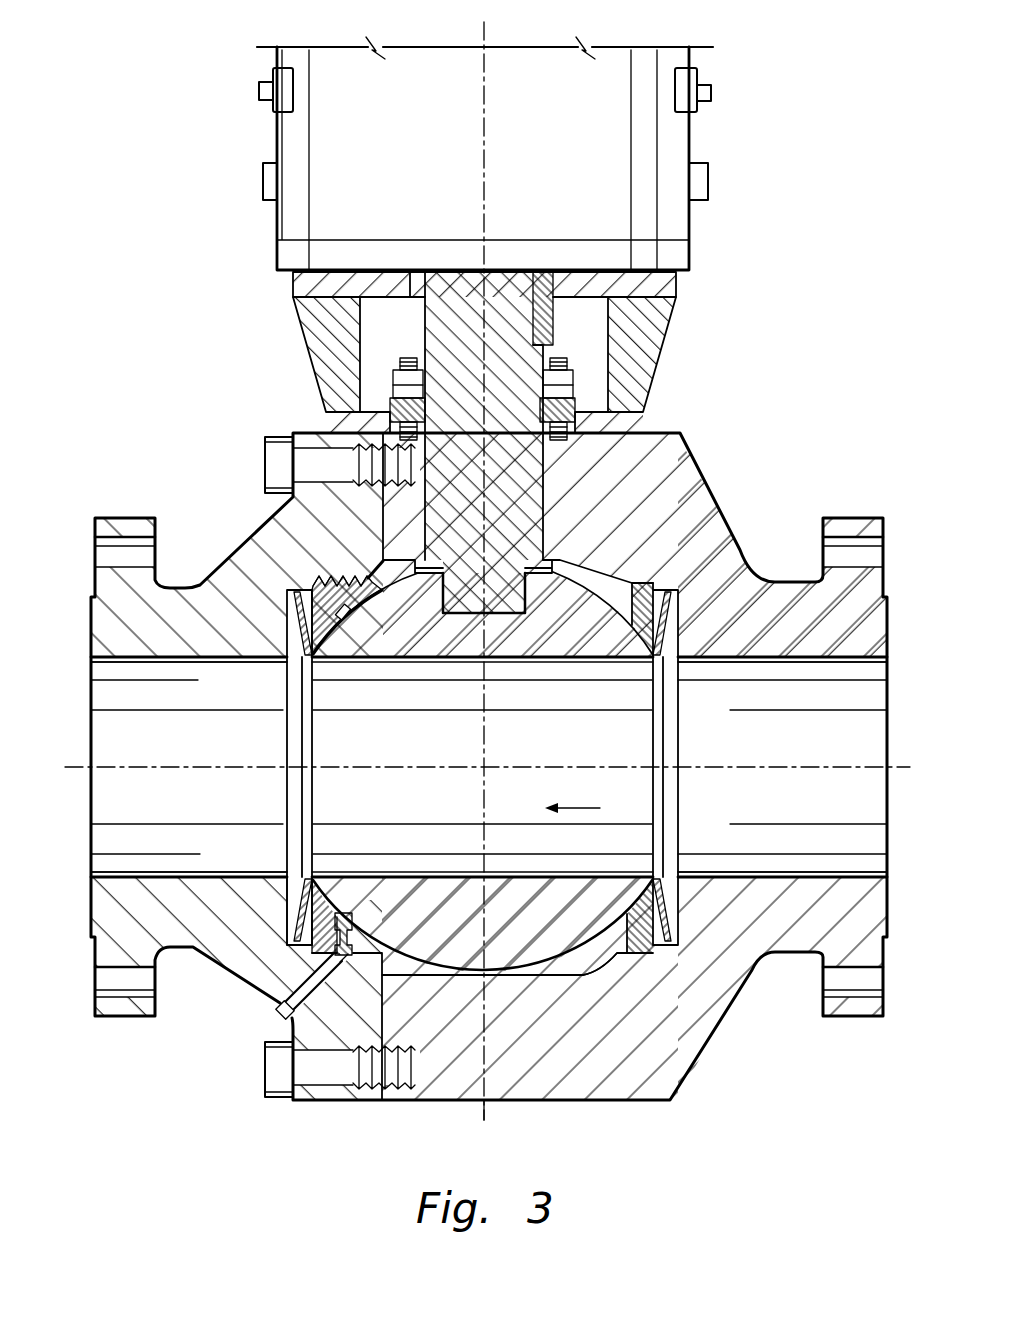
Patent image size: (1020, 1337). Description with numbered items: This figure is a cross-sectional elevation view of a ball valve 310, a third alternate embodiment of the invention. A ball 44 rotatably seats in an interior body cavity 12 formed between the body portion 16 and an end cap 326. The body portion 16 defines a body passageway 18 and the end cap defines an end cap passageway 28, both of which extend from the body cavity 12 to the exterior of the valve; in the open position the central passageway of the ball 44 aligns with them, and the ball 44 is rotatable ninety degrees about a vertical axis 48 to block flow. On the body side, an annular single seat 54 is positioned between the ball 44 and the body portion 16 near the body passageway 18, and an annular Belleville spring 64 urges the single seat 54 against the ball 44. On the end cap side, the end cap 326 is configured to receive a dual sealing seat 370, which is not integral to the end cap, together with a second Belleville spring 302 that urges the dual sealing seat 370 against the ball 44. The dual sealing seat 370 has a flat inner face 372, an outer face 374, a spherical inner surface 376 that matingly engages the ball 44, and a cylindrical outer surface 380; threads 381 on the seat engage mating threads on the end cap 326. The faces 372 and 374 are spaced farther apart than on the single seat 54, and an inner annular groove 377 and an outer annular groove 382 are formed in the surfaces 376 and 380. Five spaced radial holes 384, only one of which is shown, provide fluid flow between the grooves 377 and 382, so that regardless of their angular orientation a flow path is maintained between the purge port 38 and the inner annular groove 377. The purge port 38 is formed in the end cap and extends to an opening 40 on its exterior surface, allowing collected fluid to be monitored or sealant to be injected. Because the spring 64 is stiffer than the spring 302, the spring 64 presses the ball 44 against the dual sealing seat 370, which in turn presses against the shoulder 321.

The interior body cavity 12 is at (598, 962).
The body portion 16 is at (880, 614).
The body passageway 18 is at (760, 845).
The end cap passageway 28 is at (175, 830).
The purge port 38 is at (308, 984).
The opening 40 is at (281, 1018).
The ball 44 is at (550, 978).
The vertical axis 48 is at (486, 34).
The single seat 54 is at (640, 582).
The annular spring 64 is at (668, 645).
The Belleville spring 302 is at (291, 633).
The ball valve 310 is at (466, 1167).
The shoulder 321 is at (297, 933).
The end cap 326 is at (100, 616).
The dual sealing seat 370 is at (328, 580).
The flat inner face 372 is at (378, 588).
The outer face 374 is at (290, 607).
The spherical inner surface 376 is at (340, 625).
The inner annular groove 377 is at (347, 903).
The cylindrical outer surface 380 is at (316, 585).
The threads 381 is at (359, 952).
The outer annular groove 382 is at (345, 575).
The radial holes 384 is at (358, 937).